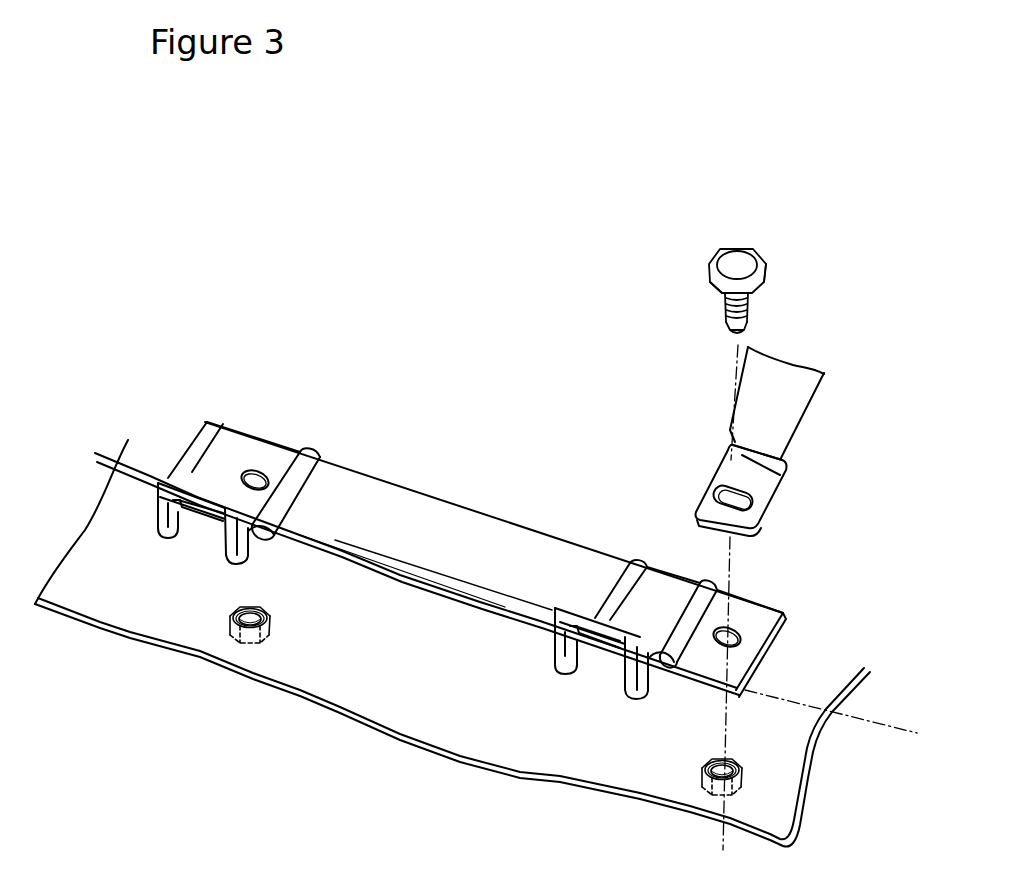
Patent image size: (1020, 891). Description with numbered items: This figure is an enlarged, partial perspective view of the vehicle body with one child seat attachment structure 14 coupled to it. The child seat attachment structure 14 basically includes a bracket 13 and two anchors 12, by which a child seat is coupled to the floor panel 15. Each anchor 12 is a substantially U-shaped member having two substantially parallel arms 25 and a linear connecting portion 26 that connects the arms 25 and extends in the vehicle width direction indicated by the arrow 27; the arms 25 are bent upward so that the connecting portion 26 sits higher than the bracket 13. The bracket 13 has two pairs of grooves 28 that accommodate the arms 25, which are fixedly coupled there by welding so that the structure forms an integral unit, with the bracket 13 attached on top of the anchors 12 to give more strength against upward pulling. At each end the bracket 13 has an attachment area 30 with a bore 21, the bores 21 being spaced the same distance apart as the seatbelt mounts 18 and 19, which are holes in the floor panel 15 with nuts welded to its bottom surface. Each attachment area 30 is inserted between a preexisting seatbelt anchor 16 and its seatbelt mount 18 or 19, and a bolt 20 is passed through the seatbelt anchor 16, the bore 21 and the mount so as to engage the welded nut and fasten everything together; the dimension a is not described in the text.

The anchor 12 is at (208, 520).
The bracket 13 is at (443, 504).
The child seat attachment structure 14 is at (418, 596).
The floor panel 15 is at (135, 616).
The seatbelt anchor 16 is at (717, 477).
The seatbelt mount 18 is at (739, 771).
The seatbelt mount 19 is at (243, 633).
The bolt 20 is at (710, 272).
The bore 21 is at (748, 620).
The arm 25 is at (153, 503).
The connecting portion 26 is at (204, 470).
The arrow 27 is at (495, 467).
The groove 28 is at (250, 430).
The attachment area 30 is at (498, 498).
The clearance a is at (866, 703).